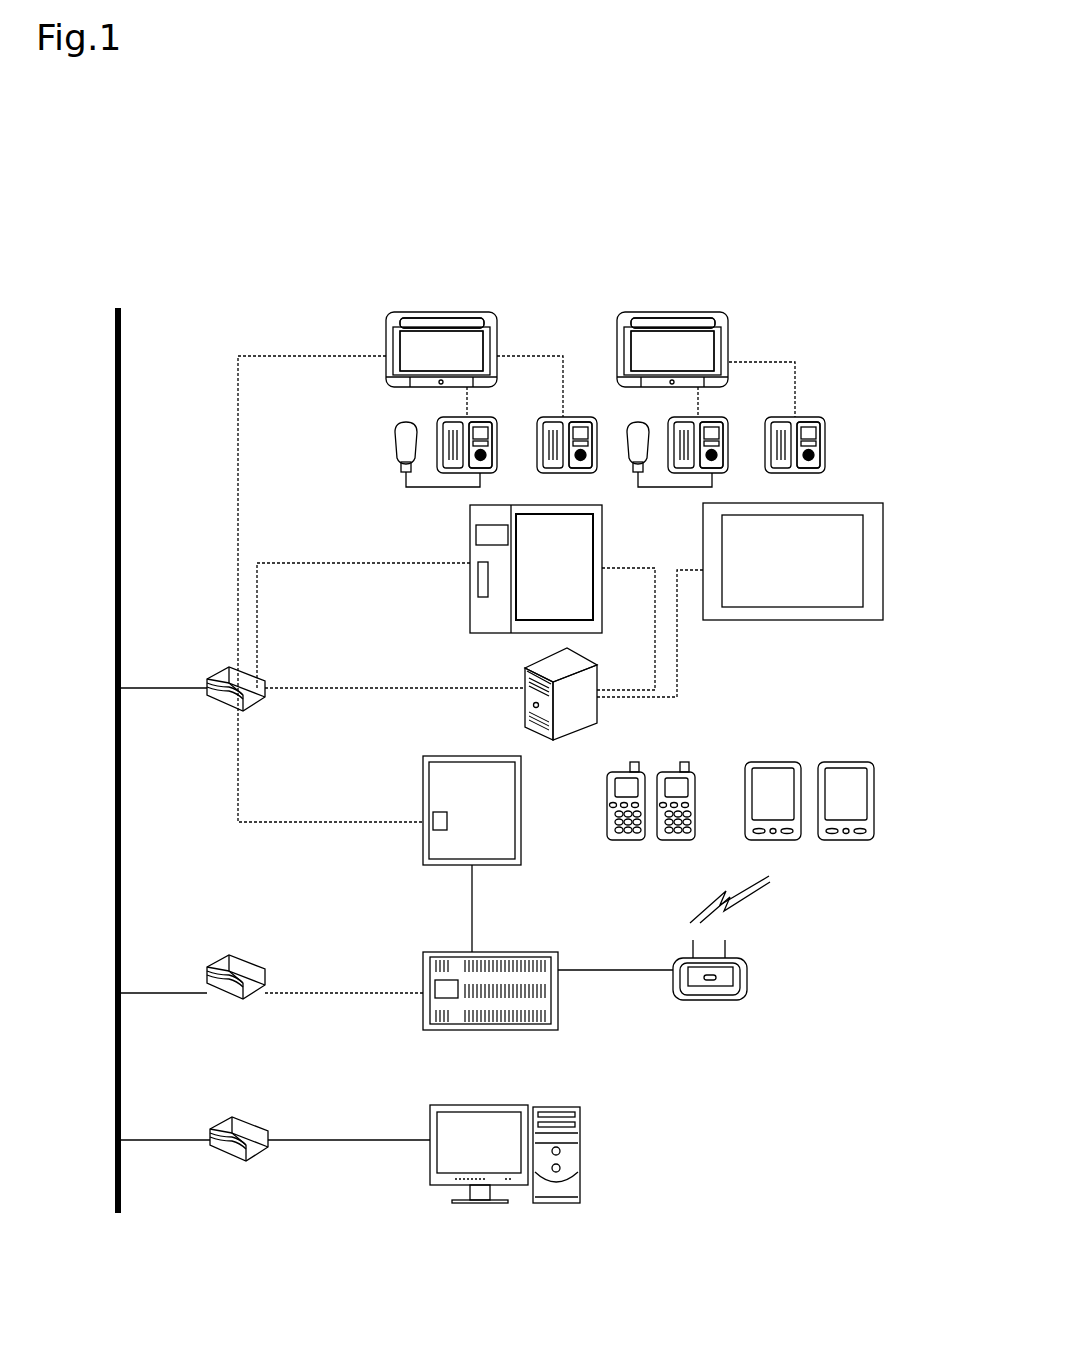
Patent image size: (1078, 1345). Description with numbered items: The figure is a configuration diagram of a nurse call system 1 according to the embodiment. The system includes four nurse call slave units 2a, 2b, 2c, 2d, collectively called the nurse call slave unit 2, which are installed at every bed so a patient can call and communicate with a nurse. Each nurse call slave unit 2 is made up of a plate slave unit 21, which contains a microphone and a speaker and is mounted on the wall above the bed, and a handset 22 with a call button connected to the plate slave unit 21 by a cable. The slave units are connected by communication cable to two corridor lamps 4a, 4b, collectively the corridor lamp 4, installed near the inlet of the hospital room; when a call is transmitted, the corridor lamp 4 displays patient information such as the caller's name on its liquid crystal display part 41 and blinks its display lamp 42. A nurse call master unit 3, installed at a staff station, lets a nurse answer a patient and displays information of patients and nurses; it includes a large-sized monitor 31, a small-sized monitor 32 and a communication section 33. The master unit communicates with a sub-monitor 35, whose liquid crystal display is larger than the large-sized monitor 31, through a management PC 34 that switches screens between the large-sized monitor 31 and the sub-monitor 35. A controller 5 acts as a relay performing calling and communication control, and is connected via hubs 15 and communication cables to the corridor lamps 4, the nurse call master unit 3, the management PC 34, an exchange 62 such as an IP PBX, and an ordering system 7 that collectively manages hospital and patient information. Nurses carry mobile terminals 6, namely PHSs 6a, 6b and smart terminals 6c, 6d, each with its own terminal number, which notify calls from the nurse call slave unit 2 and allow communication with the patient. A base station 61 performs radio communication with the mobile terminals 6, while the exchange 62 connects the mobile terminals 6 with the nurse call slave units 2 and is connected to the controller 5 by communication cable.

The nurse call system 1 is at (633, 202).
The nurse call slave unit 2 is at (436, 460).
The nurse call slave unit 2a is at (476, 415).
The nurse call slave unit 2b is at (576, 415).
The nurse call slave unit 2c is at (711, 415).
The nurse call slave unit 2d is at (809, 415).
The nurse call master unit 3 is at (469, 549).
The corridor lamp 4 is at (632, 262).
The corridor lamp 4a is at (476, 311).
The corridor lamp 4b is at (656, 311).
The controller 5 is at (422, 790).
The mobile terminal 6 is at (838, 688).
The PHS 6a is at (612, 775).
The PHS 6b is at (672, 770).
The smart terminal 6c is at (780, 762).
The smart terminal 6d is at (856, 762).
The ordering system 7 is at (495, 1105).
The hub 15 is at (226, 677).
The plate slave unit 21 is at (497, 464).
The handset 22 is at (404, 442).
The large-sized monitor 31 is at (595, 519).
The small-sized monitor 32 is at (485, 524).
The communication section 33 is at (480, 600).
The management PC 34 is at (578, 660).
The sub-monitor 35 is at (884, 531).
The liquid crystal display part 41 is at (412, 341).
The display lamp 42 is at (402, 318).
The base station 61 is at (748, 974).
The exchange 62 is at (562, 960).